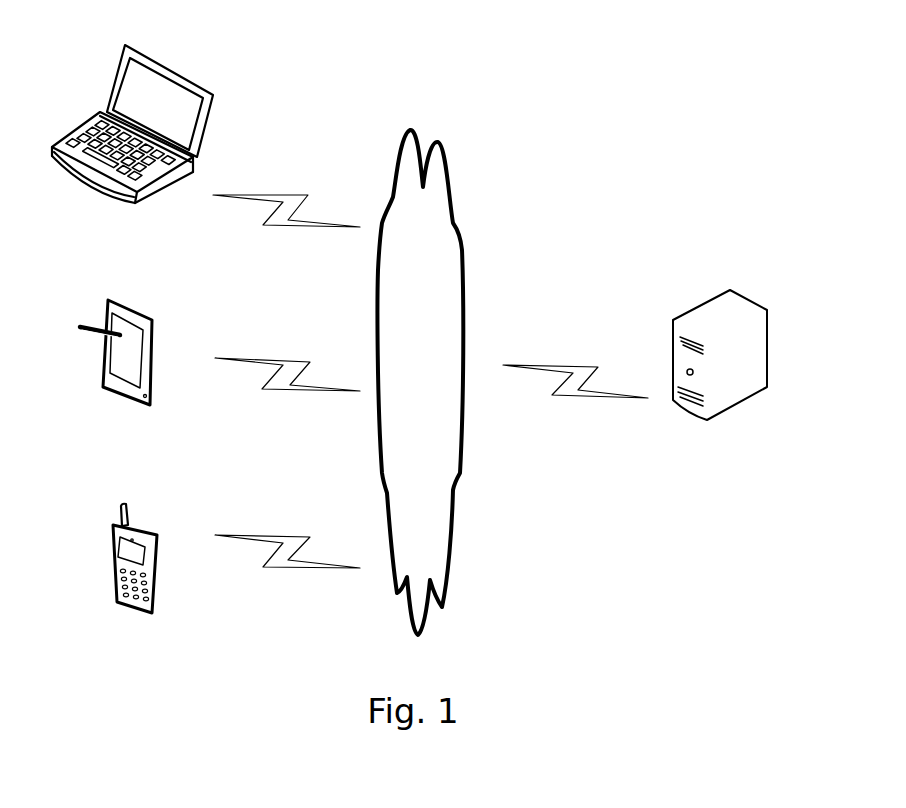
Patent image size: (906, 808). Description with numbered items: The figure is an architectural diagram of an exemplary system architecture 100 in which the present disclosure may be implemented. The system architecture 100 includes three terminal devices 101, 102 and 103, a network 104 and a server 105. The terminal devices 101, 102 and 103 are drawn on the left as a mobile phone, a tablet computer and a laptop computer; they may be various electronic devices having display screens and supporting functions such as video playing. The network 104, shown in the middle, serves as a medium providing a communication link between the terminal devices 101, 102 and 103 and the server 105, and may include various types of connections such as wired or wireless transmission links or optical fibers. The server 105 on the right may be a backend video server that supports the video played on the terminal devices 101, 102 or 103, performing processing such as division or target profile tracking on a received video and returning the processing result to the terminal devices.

The system architecture 100 is at (675, 37).
The terminal device 101 is at (135, 577).
The terminal device 102 is at (116, 371).
The terminal device 103 is at (132, 144).
The network 104 is at (420, 382).
The server 105 is at (720, 376).